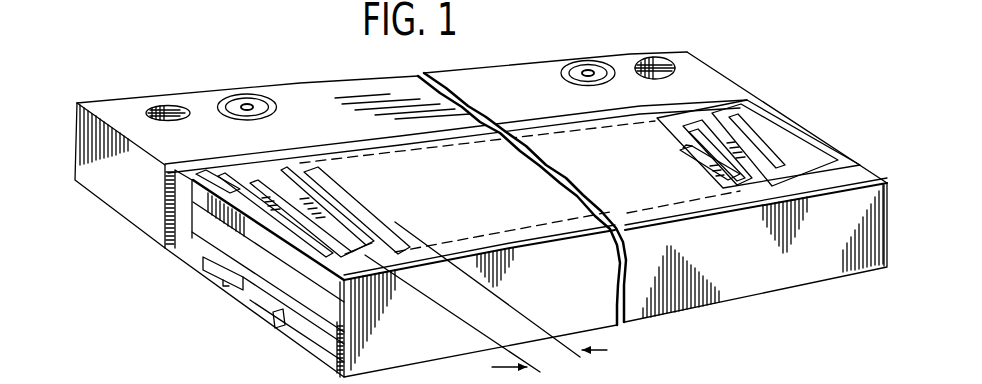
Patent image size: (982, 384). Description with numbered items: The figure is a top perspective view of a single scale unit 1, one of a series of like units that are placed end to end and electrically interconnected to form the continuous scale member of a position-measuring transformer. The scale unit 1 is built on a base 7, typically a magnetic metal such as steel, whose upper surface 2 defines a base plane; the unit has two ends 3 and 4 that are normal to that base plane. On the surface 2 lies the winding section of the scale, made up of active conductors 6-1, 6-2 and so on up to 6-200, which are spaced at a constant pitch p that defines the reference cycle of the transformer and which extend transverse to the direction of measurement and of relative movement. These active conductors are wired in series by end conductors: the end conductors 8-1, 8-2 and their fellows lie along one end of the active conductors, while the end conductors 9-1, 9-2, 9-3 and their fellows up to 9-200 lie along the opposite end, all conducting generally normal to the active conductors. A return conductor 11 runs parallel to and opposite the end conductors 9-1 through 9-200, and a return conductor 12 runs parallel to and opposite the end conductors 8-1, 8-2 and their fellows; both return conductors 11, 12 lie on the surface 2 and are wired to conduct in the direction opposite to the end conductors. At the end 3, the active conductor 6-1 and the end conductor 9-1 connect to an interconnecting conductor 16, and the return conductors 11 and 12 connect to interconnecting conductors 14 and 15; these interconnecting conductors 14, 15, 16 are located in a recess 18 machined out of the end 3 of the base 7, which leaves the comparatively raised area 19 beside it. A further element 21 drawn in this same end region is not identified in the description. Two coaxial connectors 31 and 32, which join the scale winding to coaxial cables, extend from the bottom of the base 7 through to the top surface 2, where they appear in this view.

The scale unit 1 is at (613, 38).
The surface 2 is at (505, 77).
The end 3 is at (88, 150).
The end 4 is at (707, 62).
The base 7 is at (77, 103).
The return conductor 11 is at (447, 133).
The return conductor 12 is at (533, 244).
The coaxial connector 31 is at (583, 62).
The coaxial connector 32 is at (235, 100).
The end conductor 9-1 is at (211, 184).
The end conductor 9-2 is at (257, 178).
The end conductor 9-3 is at (306, 172).
The active conductor 6-1 is at (237, 197).
The active conductor 6-2 is at (335, 248).
The end conductor 9-200 is at (760, 107).
The active conductor 6-200 is at (773, 115).
The end conductor 8-1 is at (362, 290).
The end conductor 8-2 is at (405, 268).
The interconnecting conductor 14 is at (203, 258).
The interconnecting conductor 15 is at (305, 323).
The interconnecting conductor 16 is at (230, 250).
The recess 18 is at (277, 280).
The raised area 19 is at (213, 213).
The gap layer 21 is at (283, 325).
The pitch p is at (486, 297).